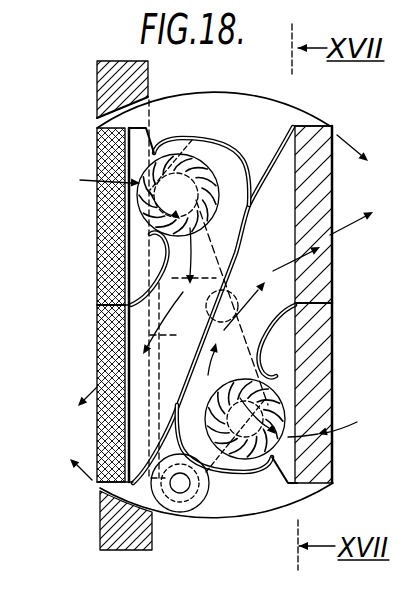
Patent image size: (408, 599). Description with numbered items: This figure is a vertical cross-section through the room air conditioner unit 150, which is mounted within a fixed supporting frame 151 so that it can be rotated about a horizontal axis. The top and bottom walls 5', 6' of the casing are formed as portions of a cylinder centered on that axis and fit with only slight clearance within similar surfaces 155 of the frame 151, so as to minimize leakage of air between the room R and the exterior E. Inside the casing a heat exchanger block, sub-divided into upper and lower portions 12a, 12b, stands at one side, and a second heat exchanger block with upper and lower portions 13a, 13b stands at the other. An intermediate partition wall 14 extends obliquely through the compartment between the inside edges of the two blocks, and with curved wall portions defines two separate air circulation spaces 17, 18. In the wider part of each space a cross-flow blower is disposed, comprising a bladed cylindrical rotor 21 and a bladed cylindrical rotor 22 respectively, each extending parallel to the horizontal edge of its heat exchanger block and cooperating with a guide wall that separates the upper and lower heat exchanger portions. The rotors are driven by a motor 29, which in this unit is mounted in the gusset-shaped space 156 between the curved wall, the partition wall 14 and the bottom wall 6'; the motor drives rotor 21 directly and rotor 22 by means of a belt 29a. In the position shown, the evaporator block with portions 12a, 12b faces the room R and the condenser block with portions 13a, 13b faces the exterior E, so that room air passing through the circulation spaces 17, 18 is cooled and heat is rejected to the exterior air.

The fixed supporting frame 151 is at (102, 60).
The similar surfaces of the frame 155 is at (117, 108).
The bladed cylindrical rotor 21 is at (100, 158).
The upper portion of heat exchanger block 12a is at (100, 229).
The lower portion of heat exchanger block 12b is at (100, 345).
The belt 29a is at (152, 410).
The motor 29 is at (203, 512).
The gusset-shaped space 156 is at (228, 500).
The bottom wall 6' is at (216, 527).
The top wall 5' is at (213, 97).
The unit 150 is at (346, 113).
The partition wall 14 is at (248, 222).
The upper portion of heat exchanger block 13a is at (320, 213).
The lower portion of heat exchanger block 13b is at (320, 386).
The second air circulation space 18 is at (275, 261).
The air circulation space 17 is at (194, 334).
The bladed cylindrical rotor 22 is at (300, 345).
The room R is at (80, 320).
The exterior E is at (355, 320).